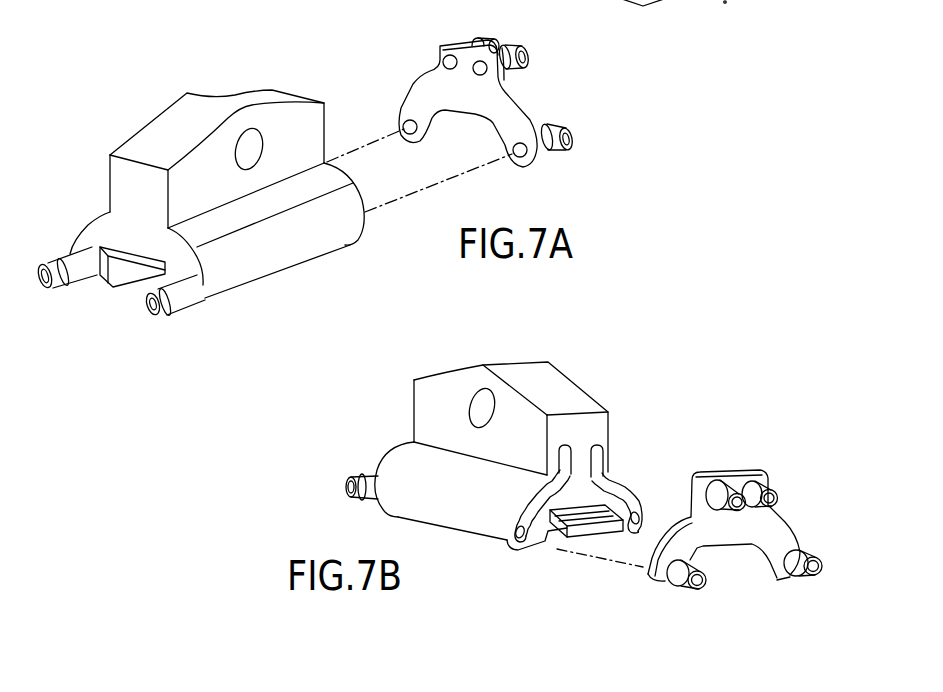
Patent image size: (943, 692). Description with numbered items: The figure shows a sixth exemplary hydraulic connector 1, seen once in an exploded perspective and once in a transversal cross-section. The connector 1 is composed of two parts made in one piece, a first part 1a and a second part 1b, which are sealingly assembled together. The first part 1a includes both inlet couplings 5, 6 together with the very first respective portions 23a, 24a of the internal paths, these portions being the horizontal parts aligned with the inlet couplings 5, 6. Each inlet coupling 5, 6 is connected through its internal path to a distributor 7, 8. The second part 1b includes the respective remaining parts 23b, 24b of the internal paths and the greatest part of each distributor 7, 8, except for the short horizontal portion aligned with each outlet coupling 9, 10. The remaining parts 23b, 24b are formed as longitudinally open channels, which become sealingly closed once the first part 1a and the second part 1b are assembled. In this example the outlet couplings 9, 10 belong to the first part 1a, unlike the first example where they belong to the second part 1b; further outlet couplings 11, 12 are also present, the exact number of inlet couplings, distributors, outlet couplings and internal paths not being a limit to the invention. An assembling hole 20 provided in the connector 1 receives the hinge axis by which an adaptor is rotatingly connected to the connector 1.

In FIG. 7A, the hydraulic connector 1 is at (200, 199).
In FIG. 7B, the hydraulic connector 1 is at (496, 445).
In FIG. 7A, the first part made in one piece 1a is at (481, 90).
In FIG. 7B, the first part made in one piece 1a is at (688, 532).
In FIG. 7A, the second part made in one piece 1b is at (318, 120).
In FIG. 7B, the second part made in one piece 1b is at (582, 400).
In FIG. 7A, the inlet coupling 5 is at (517, 45).
In FIG. 7B, the inlet coupling 5 is at (724, 487).
In FIG. 7A, the inlet coupling 6 is at (478, 37).
In FIG. 7B, the inlet coupling 6 is at (768, 484).
In FIG. 7A, the distributor 7 is at (284, 270).
In FIG. 7B, the distributor 7 is at (484, 547).
In FIG. 7A, the distributor 8 is at (98, 293).
In FIG. 7B, the distributor 8 is at (617, 546).
In FIG. 7A, the outlet coupling 9 is at (566, 130).
In FIG. 7B, the outlet coupling 9 is at (705, 584).
In FIG. 7B, the outlet coupling 10 is at (803, 551).
In FIG. 7A, the outlet coupling 11 is at (168, 308).
In FIG. 7B, the outlet coupling 11 is at (350, 478).
In FIG. 7A, the outlet coupling 12 is at (52, 262).
In FIG. 7A, the assembling hole 20 is at (253, 130).
In FIG. 7B, the assembling hole 20 is at (478, 402).
In FIG. 7A, the first portion of internal path 23a is at (492, 77).
In FIG. 7B, the remaining part of internal path 23b is at (526, 517).
In FIG. 7A, the first portion of internal path 24a is at (445, 56).
In FIG. 7B, the remaining part of internal path 24b is at (572, 485).